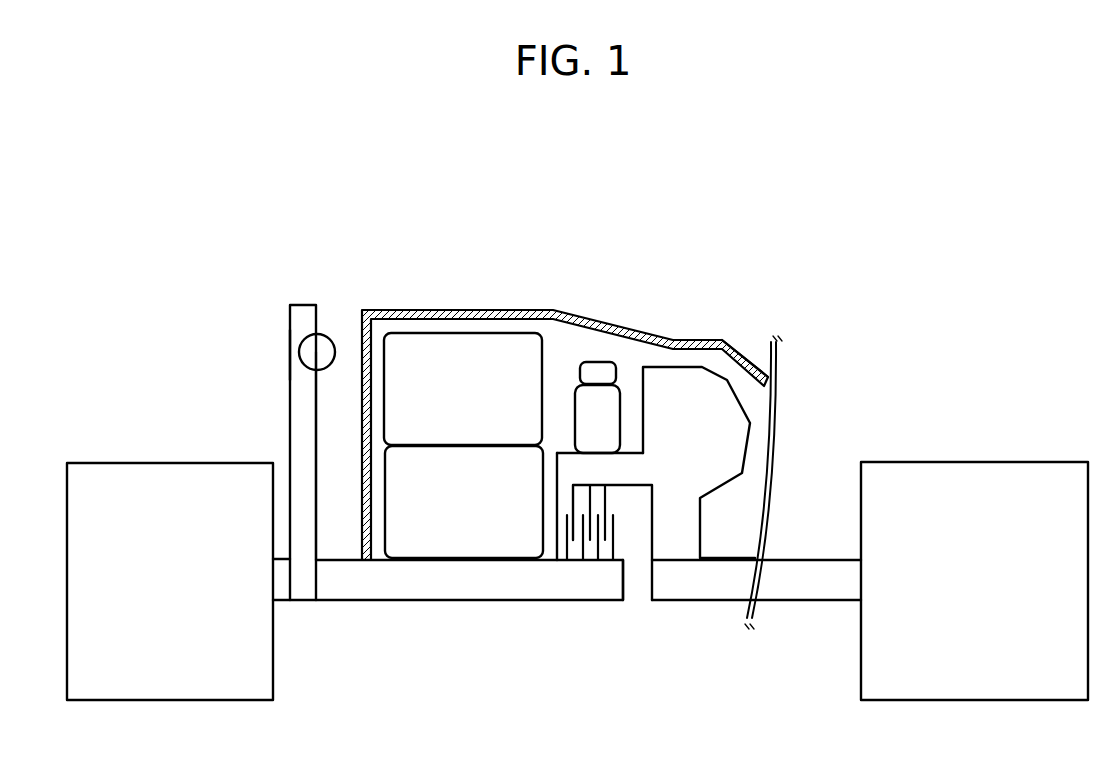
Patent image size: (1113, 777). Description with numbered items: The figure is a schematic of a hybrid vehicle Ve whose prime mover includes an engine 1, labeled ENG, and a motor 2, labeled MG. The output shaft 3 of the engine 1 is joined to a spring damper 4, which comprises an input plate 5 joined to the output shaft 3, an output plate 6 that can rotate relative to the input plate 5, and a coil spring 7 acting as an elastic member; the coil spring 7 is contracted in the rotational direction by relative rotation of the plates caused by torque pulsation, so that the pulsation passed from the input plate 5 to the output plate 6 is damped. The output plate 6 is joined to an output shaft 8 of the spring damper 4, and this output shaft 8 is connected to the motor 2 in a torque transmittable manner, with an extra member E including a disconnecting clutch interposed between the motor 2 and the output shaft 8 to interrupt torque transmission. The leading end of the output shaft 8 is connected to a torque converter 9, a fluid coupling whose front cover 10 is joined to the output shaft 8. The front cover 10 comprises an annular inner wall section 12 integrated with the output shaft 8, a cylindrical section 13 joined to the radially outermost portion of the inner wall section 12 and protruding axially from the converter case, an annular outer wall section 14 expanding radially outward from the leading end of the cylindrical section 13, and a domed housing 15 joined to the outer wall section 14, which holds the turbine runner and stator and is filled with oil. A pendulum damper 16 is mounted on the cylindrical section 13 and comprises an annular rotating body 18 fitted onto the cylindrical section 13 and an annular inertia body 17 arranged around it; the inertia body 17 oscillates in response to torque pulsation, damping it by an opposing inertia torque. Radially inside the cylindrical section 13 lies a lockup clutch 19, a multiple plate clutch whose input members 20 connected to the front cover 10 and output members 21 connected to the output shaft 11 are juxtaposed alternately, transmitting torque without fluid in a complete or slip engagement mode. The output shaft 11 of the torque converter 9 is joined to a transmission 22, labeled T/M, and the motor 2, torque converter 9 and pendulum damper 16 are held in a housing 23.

The engine 1 is at (176, 462).
The motor 2 is at (463, 332).
The output shaft 3 is at (289, 601).
The spring damper 4 is at (301, 298).
The input plate 5 is at (289, 358).
The output plate 6 is at (318, 430).
The coil spring 7 is at (326, 338).
The output shaft 8 is at (343, 590).
The torque converter 9 is at (714, 512).
The front cover 10 is at (691, 420).
The output shaft 11 is at (682, 590).
The inner wall section 12 is at (557, 520).
The cylindrical section 13 is at (564, 447).
The outer wall section 14 is at (638, 388).
The housing 15 is at (720, 358).
The pendulum damper 16 is at (611, 462).
The inertia body 17 is at (597, 362).
The rotating body 18 is at (605, 415).
The lockup clutch 19 is at (618, 548).
The input member 20 is at (585, 545).
The output member 21 is at (570, 528).
The transmission 22 is at (980, 461).
The housing 23 is at (415, 309).
The extra member E is at (465, 540).
The vehicle Ve is at (818, 243).